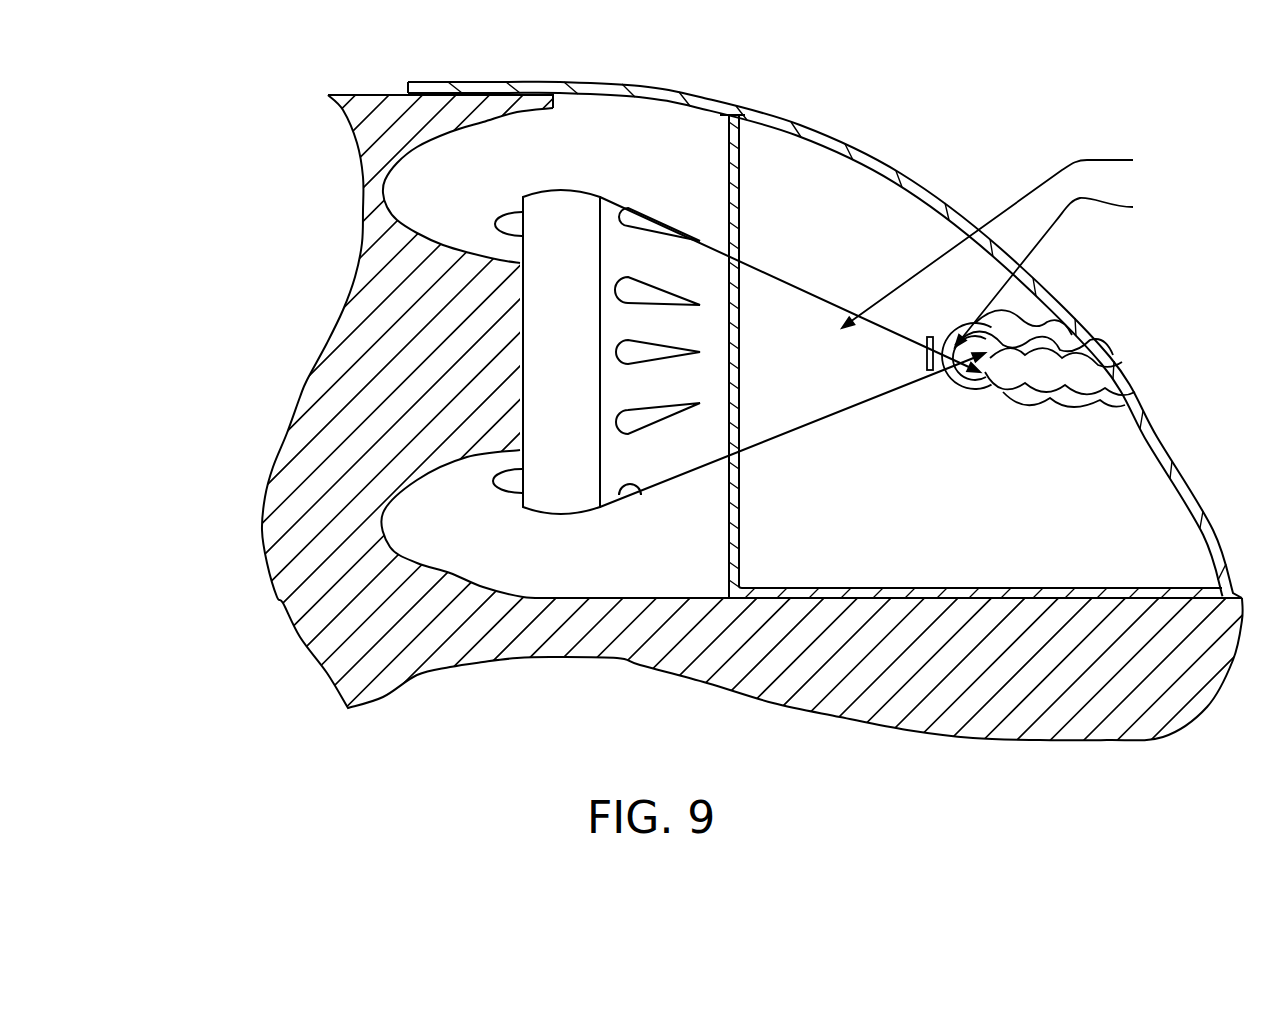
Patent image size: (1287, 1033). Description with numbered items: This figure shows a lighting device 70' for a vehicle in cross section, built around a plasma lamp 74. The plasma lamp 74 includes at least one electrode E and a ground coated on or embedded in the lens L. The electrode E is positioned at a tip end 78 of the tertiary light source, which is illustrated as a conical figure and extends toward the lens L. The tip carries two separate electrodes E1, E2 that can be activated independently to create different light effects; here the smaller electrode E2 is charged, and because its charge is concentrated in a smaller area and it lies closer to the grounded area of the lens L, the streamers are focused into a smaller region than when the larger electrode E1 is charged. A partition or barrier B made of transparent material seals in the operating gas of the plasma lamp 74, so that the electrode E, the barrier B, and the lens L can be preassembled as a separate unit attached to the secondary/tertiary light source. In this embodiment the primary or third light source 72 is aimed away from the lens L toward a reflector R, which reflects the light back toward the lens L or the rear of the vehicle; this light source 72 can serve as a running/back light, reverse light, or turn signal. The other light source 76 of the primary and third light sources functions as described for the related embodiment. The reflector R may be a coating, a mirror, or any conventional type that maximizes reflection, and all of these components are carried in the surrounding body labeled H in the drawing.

The lighting device 70' is at (643, 466).
The primary or third light source 72 is at (490, 215).
The plasma lamp 74 is at (933, 438).
The other of the primary and third light sources 76 is at (645, 440).
The tip end 78 is at (1002, 379).
The barrier B is at (742, 480).
The lens L is at (1117, 351).
The electrode E is at (1177, 138).
The first electrode E1 is at (1009, 237).
The second electrode E2 is at (1065, 270).
The reflector R is at (436, 561).
The housing H is at (845, 652).